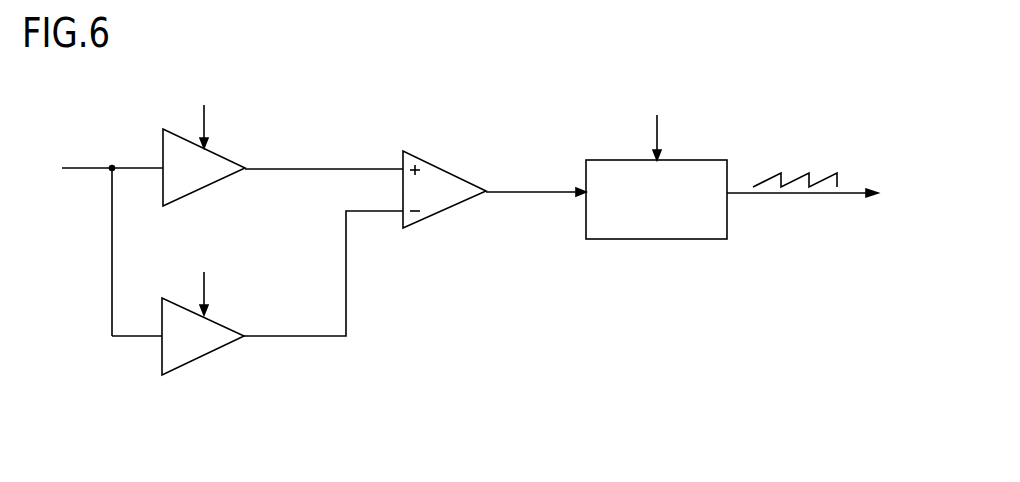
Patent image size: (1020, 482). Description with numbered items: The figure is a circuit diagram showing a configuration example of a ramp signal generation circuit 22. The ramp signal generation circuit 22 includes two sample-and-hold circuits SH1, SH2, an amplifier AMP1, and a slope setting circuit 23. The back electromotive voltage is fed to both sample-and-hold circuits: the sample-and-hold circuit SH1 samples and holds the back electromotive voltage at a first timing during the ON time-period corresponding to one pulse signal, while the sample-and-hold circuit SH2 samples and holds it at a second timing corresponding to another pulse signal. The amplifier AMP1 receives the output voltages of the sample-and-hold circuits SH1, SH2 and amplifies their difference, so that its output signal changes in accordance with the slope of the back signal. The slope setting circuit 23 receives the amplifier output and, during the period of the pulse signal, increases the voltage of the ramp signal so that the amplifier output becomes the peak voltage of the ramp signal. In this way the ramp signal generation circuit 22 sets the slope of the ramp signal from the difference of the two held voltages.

The ramp signal generation circuit 22 is at (454, 271).
The sample-and-hold circuit SH1 is at (205, 187).
The sample-and-hold circuit SH2 is at (204, 355).
The amplifier AMP1 is at (445, 210).
The slope setting circuit 23 is at (657, 240).